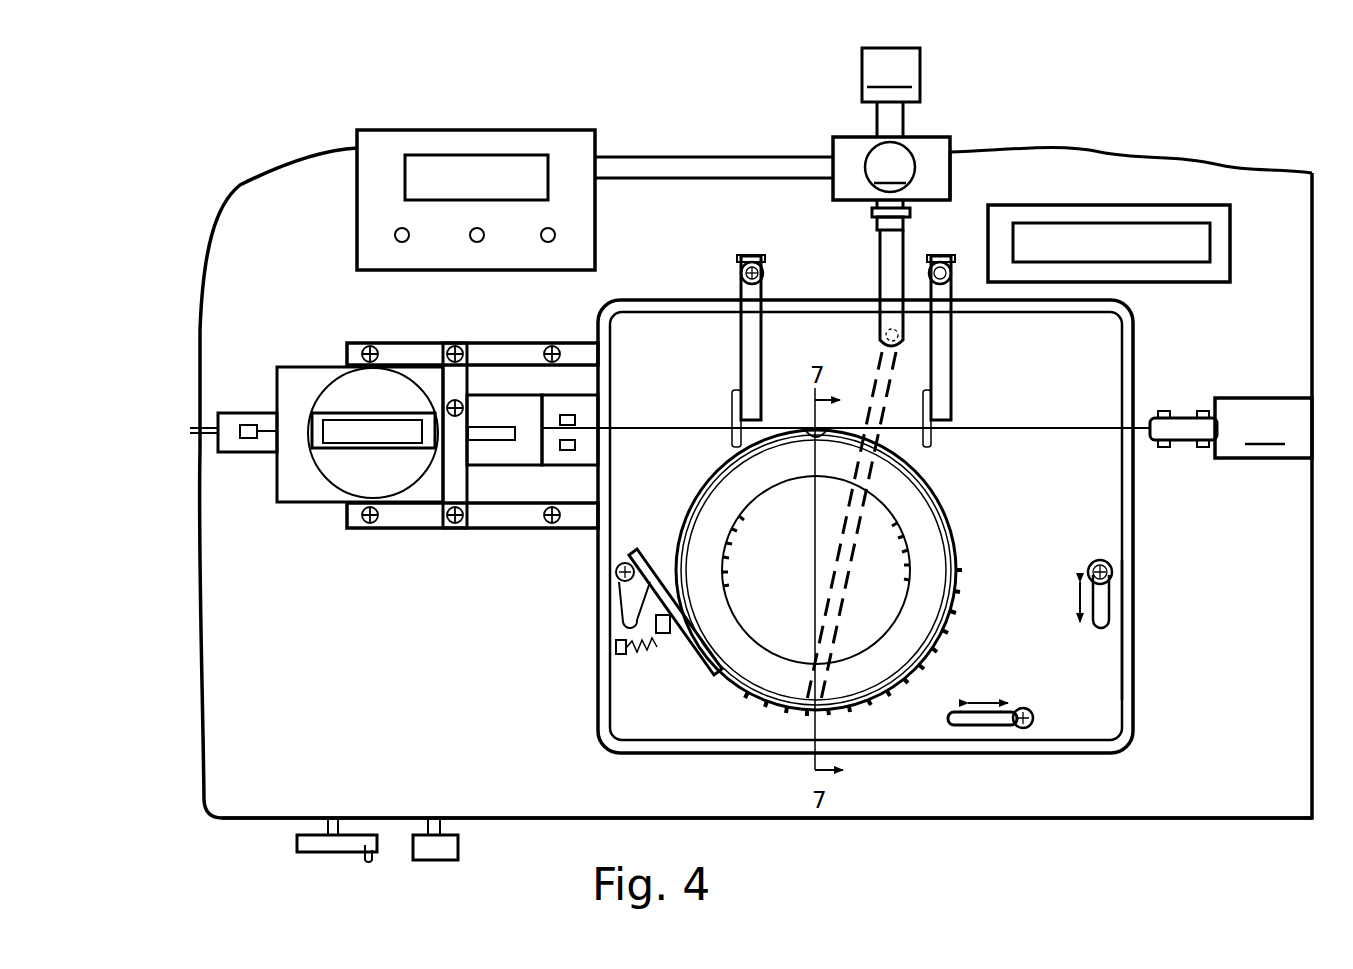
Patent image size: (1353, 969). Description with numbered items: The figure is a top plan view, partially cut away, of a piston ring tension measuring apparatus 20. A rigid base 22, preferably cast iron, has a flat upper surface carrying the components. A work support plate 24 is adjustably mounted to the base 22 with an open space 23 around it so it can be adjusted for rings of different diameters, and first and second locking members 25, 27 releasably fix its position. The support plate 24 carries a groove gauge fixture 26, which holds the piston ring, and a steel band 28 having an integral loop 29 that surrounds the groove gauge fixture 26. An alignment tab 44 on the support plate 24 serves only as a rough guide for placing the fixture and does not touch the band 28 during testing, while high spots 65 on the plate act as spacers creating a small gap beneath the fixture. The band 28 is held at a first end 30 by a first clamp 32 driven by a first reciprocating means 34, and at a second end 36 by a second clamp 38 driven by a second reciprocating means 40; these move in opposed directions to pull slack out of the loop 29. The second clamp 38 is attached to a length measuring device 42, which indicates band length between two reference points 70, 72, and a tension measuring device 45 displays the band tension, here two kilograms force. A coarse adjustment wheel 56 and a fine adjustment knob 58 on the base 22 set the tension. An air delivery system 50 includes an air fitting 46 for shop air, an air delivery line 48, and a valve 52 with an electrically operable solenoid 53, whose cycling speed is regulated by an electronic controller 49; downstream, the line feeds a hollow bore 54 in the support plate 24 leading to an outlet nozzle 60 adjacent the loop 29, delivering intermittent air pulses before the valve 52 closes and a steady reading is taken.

The piston ring tension measuring apparatus 20 is at (1113, 122).
The base 22 is at (323, 783).
The open space 23 is at (1127, 628).
The work support plate 24 is at (1055, 490).
The first locking member 25 is at (1030, 726).
The groove gauge fixture 26 is at (935, 550).
The second locking member 27 is at (1110, 558).
The steel band 28 is at (1092, 424).
The loop 29 is at (690, 510).
The first end 30 is at (1140, 420).
The first clamp 32 is at (1185, 415).
The first reciprocating means 34 is at (1263, 428).
The second end 36 is at (630, 427).
The second clamp 38 is at (590, 420).
The second reciprocating means 40 is at (258, 413).
The length measuring device 42 is at (305, 505).
The alignment tab 44 is at (705, 660).
The tension measuring device 45 is at (1234, 248).
The air fitting 46 is at (891, 75).
The air delivery line 48 is at (873, 120).
The electronic controller 49 is at (442, 126).
The air delivery system 50 is at (708, 128).
The valve 52 is at (963, 137).
The solenoid 53 is at (891, 168).
The hollow bore 54 is at (870, 375).
The coarse adjustment wheel 56 is at (325, 852).
The fine adjustment knob 58 is at (462, 845).
The outlet nozzle 60 is at (810, 705).
The high spots 65 is at (945, 628).
The reference point 70 is at (738, 405).
The reference point 72 is at (922, 452).